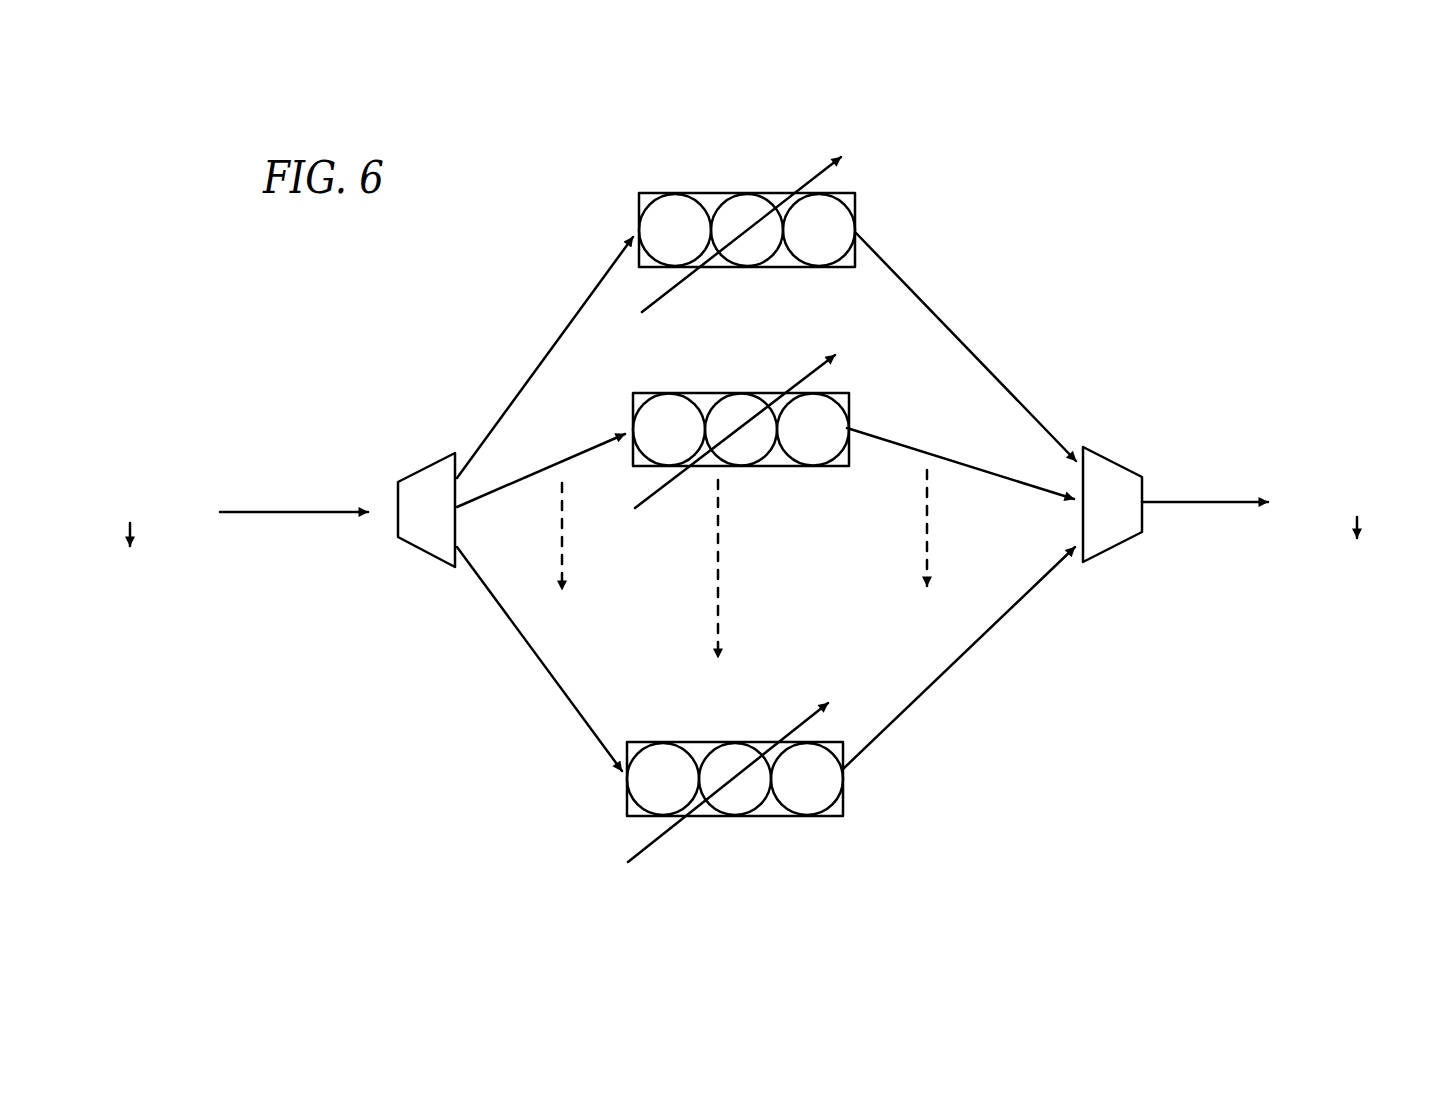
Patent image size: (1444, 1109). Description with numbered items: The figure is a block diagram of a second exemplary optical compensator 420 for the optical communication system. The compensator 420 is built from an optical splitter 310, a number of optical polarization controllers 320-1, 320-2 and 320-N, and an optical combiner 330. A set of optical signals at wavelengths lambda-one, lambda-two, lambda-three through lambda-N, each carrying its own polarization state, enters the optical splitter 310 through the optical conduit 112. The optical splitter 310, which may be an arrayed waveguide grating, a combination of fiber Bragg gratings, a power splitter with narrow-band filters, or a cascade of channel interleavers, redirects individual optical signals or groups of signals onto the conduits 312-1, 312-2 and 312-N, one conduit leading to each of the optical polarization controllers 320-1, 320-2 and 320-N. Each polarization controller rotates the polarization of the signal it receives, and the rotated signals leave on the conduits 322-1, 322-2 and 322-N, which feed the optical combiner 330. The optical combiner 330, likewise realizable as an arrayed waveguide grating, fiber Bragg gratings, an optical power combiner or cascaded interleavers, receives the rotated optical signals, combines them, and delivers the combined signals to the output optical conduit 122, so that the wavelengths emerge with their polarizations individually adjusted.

The optical conduit 112 is at (293, 514).
The optical splitter 310 is at (432, 466).
The conduit 312-1 is at (572, 321).
The conduit 312-2 is at (583, 453).
The conduit 312-N is at (542, 662).
The optical polarization controller 320-1 is at (776, 267).
The optical polarization controller 320-2 is at (770, 466).
The optical polarization controller 320-N is at (765, 817).
The conduit 322-1 is at (928, 307).
The conduit 322-2 is at (957, 462).
The conduit 322-N is at (983, 635).
The optical combiner 330 is at (1115, 463).
The optical conduit 122 is at (1208, 504).
The optical compensator 420 is at (1197, 252).